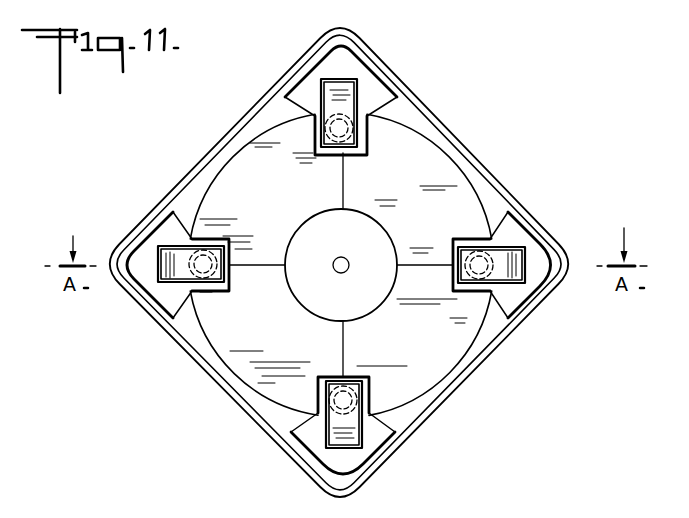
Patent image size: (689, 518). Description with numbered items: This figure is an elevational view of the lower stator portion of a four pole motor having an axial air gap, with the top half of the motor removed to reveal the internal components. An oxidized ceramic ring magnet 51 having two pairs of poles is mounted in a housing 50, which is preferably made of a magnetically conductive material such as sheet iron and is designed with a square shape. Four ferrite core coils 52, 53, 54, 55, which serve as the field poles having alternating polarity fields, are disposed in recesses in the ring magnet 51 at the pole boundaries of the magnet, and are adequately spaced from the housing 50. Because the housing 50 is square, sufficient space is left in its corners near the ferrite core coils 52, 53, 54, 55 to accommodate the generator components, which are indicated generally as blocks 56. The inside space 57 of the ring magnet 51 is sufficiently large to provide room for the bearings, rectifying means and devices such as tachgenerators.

The housing 50 is at (566, 252).
The ring magnet 51 is at (403, 138).
The ferrite core coil 52 is at (490, 258).
The ferrite core coil 53 is at (335, 418).
The ferrite core coil 54 is at (198, 272).
The ferrite core coil 55 is at (333, 122).
The generator components 56 is at (313, 72).
The inside space of the ring magnet 57 is at (382, 253).